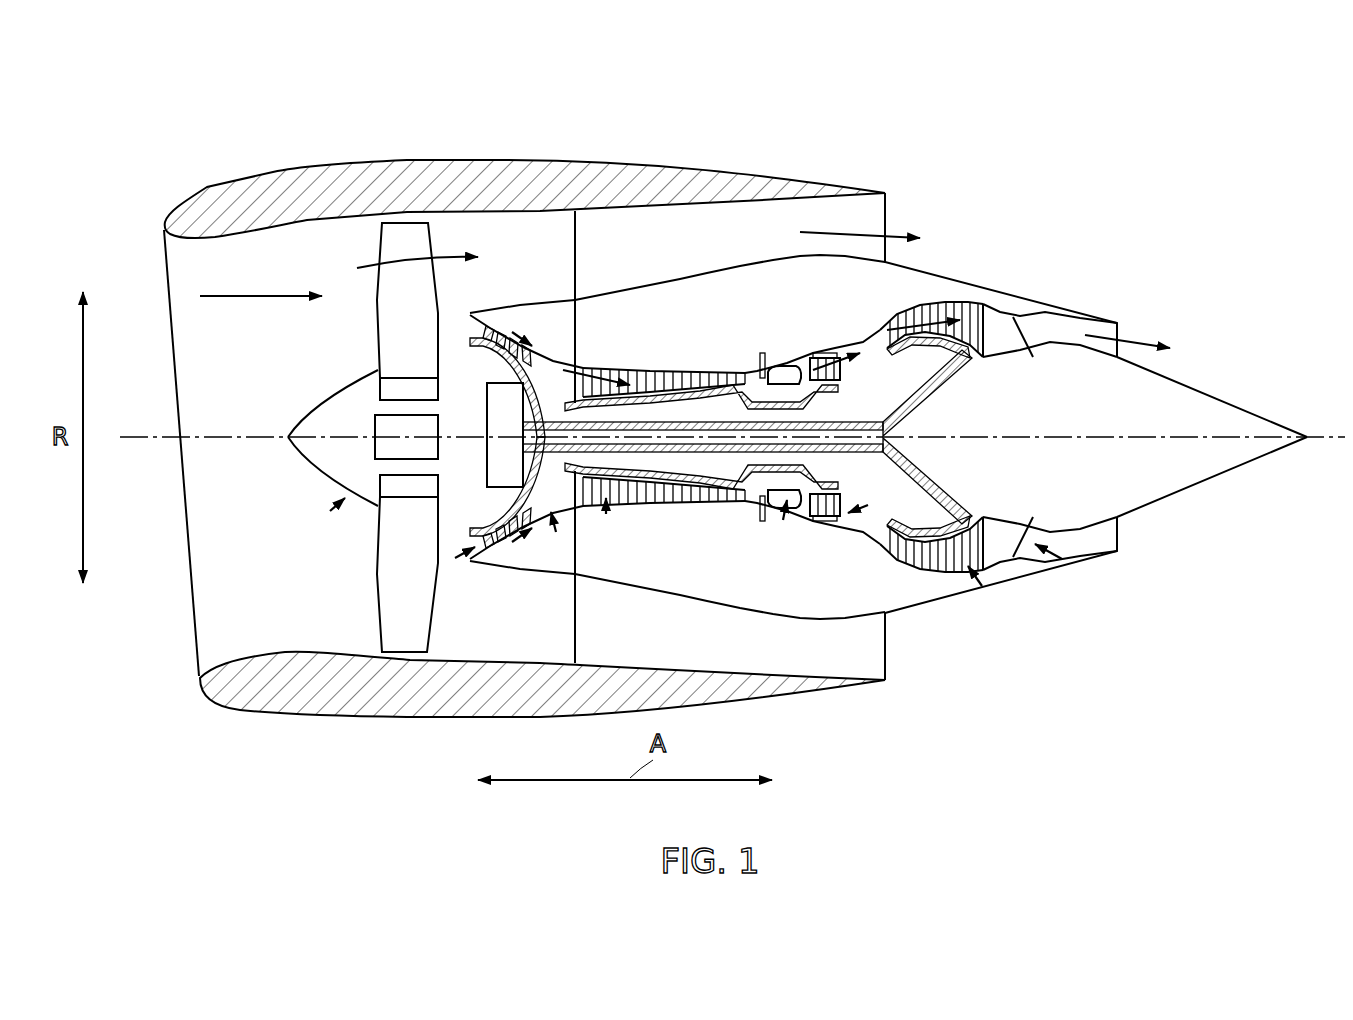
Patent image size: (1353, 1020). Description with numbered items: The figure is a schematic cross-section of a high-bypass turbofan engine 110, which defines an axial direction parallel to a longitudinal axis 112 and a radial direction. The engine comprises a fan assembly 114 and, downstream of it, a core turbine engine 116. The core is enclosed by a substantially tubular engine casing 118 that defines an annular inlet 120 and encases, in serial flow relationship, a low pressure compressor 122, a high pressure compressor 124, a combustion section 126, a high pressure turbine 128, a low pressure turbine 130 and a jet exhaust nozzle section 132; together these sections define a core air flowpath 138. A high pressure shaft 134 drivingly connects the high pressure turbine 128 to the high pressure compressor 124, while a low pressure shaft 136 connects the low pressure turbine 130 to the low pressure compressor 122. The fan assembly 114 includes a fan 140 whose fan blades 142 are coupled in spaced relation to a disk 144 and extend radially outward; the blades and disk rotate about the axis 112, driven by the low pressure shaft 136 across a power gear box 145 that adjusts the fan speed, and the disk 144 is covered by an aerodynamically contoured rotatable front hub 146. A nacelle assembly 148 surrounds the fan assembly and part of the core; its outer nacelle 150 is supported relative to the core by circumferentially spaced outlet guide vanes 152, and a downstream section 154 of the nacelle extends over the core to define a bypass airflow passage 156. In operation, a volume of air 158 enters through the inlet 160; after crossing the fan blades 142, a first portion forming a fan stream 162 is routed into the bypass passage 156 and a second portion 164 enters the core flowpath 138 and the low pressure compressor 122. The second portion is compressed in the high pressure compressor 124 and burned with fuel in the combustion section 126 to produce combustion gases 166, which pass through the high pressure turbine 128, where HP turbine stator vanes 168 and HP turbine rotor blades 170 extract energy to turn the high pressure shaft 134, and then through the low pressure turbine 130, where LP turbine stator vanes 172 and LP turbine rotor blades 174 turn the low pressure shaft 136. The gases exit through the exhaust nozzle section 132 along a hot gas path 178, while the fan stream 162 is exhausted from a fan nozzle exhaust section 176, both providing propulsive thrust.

The turbofan engine 110 is at (905, 106).
The longitudinal axis 112 is at (1027, 435).
The fan assembly 114 is at (296, 248).
The core turbine engine 116 is at (734, 340).
The engine casing 118 is at (753, 610).
The annular inlet 120 is at (462, 560).
The low pressure compressor 122 is at (520, 503).
The high pressure compressor 124 is at (606, 516).
The combustion section 126 is at (782, 520).
The high pressure turbine 128 is at (900, 505).
The low pressure turbine 130 is at (976, 584).
The jet exhaust nozzle section 132 is at (1055, 565).
The high pressure shaft 134 is at (800, 400).
The low pressure shaft 136 is at (905, 420).
The core air flowpath 138 is at (556, 534).
The fan 140 is at (328, 510).
The fan blades 142 is at (378, 603).
The disk 144 is at (395, 390).
The power gear box 145 is at (497, 405).
The rotatable front hub 146 is at (300, 448).
The nacelle assembly 148 is at (897, 692).
The outer nacelle 150 is at (425, 717).
The outlet guide vanes 152 is at (578, 250).
The downstream section 154 is at (800, 172).
The bypass airflow passage 156 is at (677, 256).
The volume of air 158 is at (262, 296).
The inlet 160 is at (197, 667).
The fan stream 162 is at (360, 266).
The second portion of air 164 is at (462, 312).
The combustion gases 166 is at (838, 358).
The HP turbine stator vanes 168 is at (805, 518).
The HP turbine rotor blades 170 is at (870, 482).
The LP turbine stator vanes 172 is at (897, 562).
The LP turbine rotor blades 174 is at (900, 568).
The fan nozzle exhaust section 176 is at (890, 212).
The hot gas path 178 is at (872, 312).